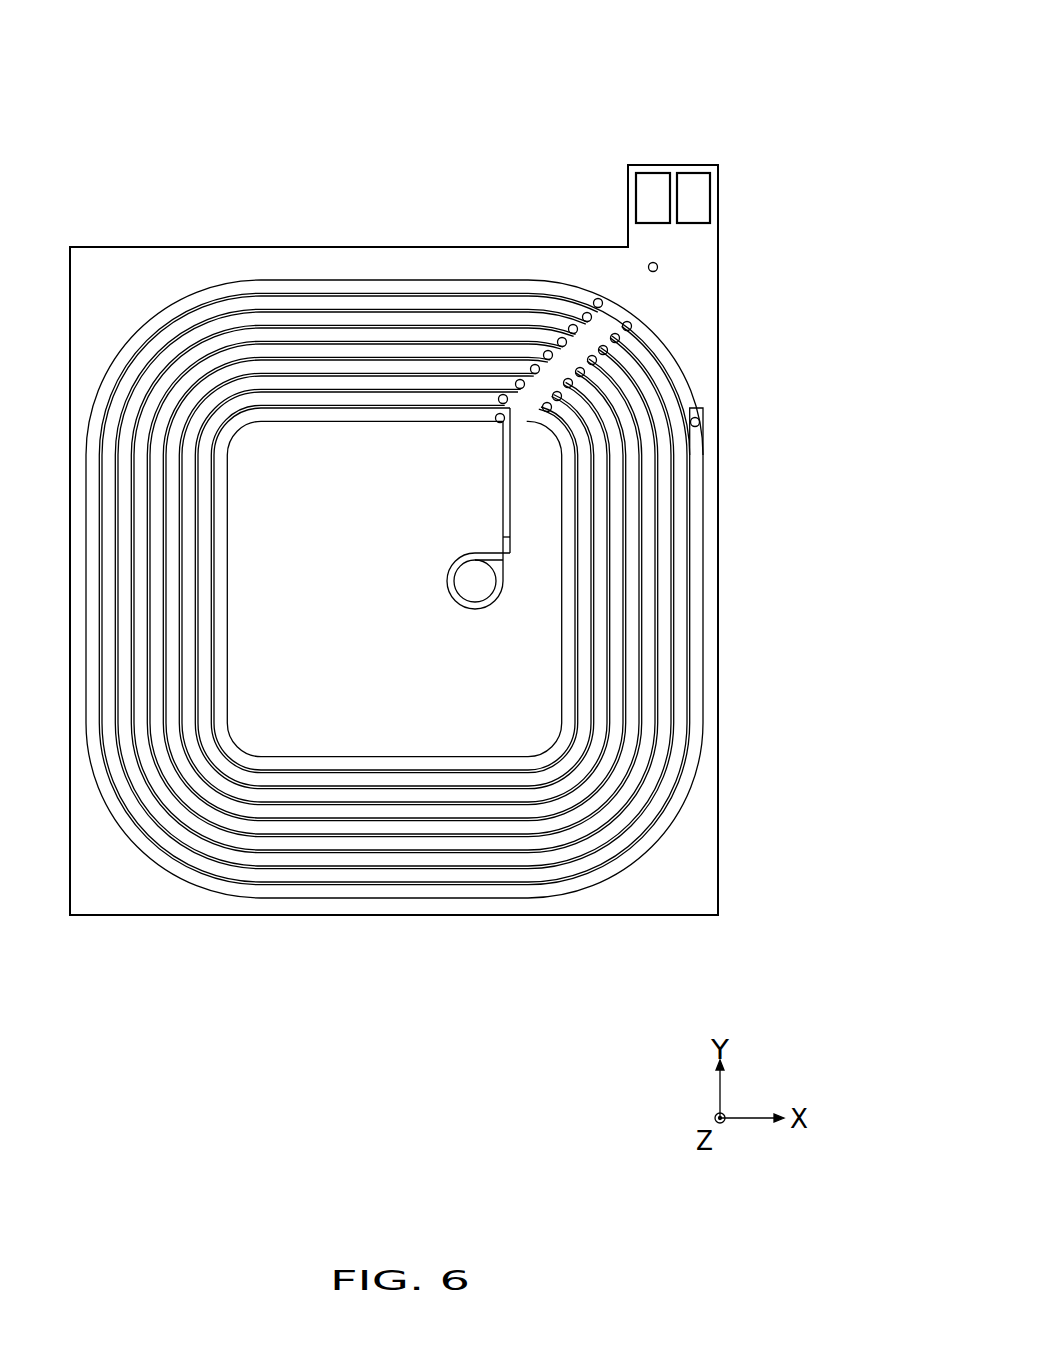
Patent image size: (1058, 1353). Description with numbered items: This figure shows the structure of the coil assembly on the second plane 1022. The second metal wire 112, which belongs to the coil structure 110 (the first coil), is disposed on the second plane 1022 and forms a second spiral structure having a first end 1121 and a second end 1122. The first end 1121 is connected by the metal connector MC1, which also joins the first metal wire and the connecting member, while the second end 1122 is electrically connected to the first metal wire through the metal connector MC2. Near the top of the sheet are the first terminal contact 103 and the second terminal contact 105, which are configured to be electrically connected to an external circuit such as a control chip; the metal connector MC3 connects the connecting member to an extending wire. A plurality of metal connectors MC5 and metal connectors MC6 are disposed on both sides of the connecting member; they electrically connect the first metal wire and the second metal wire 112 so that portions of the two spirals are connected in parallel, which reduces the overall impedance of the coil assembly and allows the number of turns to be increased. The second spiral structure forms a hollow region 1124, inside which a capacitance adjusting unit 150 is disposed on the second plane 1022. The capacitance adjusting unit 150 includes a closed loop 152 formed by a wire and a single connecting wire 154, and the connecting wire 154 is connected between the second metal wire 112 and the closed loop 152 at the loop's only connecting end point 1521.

The capacitance adjusting unit 150 is at (587, 313).
The closed loop 152 is at (446, 581).
The connecting wire 154 is at (502, 490).
The first terminal contact 103 is at (653, 181).
The second terminal contact 105 is at (694, 181).
The metal connector MC1 is at (497, 423).
The metal connector MC2 is at (699, 418).
The metal connector MC3 is at (648, 266).
The metal connectors MC5 is at (596, 299).
The metal connectors MC6 is at (632, 322).
The first end 1121 is at (470, 414).
The second end 1122 is at (705, 478).
The hollow region 1124 is at (313, 746).
The connecting end point 1521 is at (500, 537).
The second metal wire 112 is at (475, 540).
The coil structure 110 is at (714, 573).
The second plane 1022 is at (704, 810).